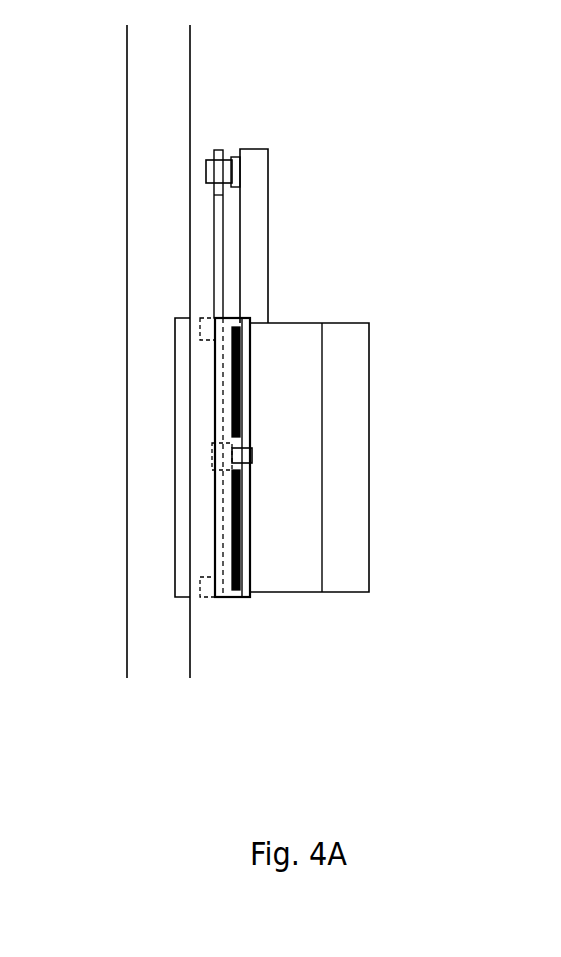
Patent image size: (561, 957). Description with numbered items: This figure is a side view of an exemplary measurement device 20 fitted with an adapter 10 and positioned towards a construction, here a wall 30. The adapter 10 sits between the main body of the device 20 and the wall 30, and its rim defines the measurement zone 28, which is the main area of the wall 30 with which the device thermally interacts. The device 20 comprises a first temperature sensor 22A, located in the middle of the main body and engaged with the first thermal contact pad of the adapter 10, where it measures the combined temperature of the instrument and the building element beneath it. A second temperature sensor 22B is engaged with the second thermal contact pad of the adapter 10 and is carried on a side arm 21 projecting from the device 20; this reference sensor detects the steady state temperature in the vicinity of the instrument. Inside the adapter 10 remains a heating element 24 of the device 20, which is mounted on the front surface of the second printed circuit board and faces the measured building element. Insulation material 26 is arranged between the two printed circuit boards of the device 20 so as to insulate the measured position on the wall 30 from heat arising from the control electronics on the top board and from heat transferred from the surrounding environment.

The adapter 10 is at (227, 620).
The measurement device 20 is at (383, 461).
The side arm 21 is at (262, 240).
The first temperature sensor 22A is at (252, 455).
The second temperature sensor 22B is at (237, 172).
The heating element 24 is at (240, 373).
The insulation material 26 is at (317, 418).
The measurement zone 28 is at (175, 457).
The wall 30 is at (190, 82).